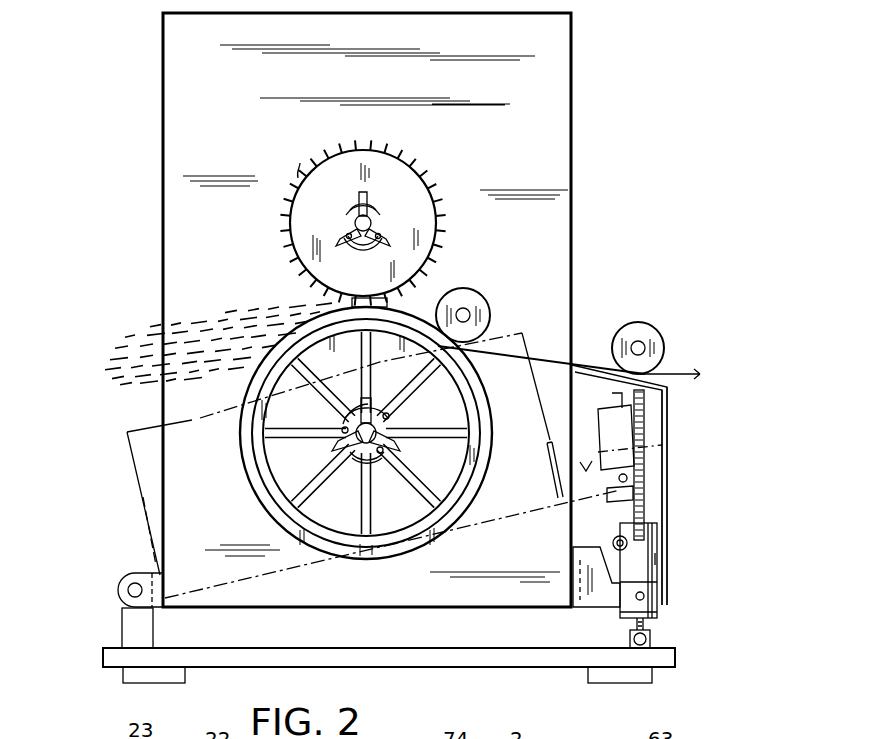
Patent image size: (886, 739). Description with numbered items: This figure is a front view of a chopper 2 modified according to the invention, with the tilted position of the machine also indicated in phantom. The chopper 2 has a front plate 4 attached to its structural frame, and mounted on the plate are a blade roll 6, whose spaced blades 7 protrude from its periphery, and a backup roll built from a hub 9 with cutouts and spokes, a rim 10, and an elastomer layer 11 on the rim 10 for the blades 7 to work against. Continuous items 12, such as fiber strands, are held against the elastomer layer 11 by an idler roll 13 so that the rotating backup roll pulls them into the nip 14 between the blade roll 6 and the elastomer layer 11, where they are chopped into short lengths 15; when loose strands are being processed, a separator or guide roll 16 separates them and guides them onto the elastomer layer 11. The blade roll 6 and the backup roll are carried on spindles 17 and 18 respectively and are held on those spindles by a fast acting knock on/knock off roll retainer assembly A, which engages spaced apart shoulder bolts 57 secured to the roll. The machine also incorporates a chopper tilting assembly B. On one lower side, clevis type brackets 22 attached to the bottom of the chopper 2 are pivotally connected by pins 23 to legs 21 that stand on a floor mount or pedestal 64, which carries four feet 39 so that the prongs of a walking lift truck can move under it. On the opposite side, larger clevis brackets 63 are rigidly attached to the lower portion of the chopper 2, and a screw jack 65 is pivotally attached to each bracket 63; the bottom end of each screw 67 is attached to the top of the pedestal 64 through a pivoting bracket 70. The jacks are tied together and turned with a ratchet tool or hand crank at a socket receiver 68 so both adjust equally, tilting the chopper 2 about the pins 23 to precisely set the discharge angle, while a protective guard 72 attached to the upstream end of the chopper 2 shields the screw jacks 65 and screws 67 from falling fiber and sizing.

The chopper 2 is at (580, 68).
The front plate 4 is at (553, 108).
The blade roll 6 is at (447, 213).
The blades 7 is at (300, 163).
The hub 9 is at (290, 373).
The rim 10 is at (245, 460).
The elastomer layer 11 is at (245, 490).
The continuous item 12 is at (585, 365).
The idler roll 13 is at (486, 311).
The nip 14 is at (450, 292).
The short lengths 15 is at (228, 306).
The guide roll 16 is at (647, 331).
The spindle 17 is at (357, 215).
The spindle 18 is at (355, 455).
The legs 21 is at (125, 632).
The brackets 22 is at (120, 588).
The pins 23 is at (135, 583).
The feet 39 is at (183, 675).
The shoulder bolts 57 is at (388, 220).
The brackets 63 is at (662, 445).
The floor mount 64 is at (360, 640).
The screw jack 65 is at (648, 545).
The screw 67 is at (640, 415).
The socket receiver 68 is at (627, 542).
The pivoting bracket 70 is at (655, 638).
The protective guard 72 is at (669, 466).
The roll retainer assembly A is at (326, 222).
The chopper tilting assembly B is at (662, 558).